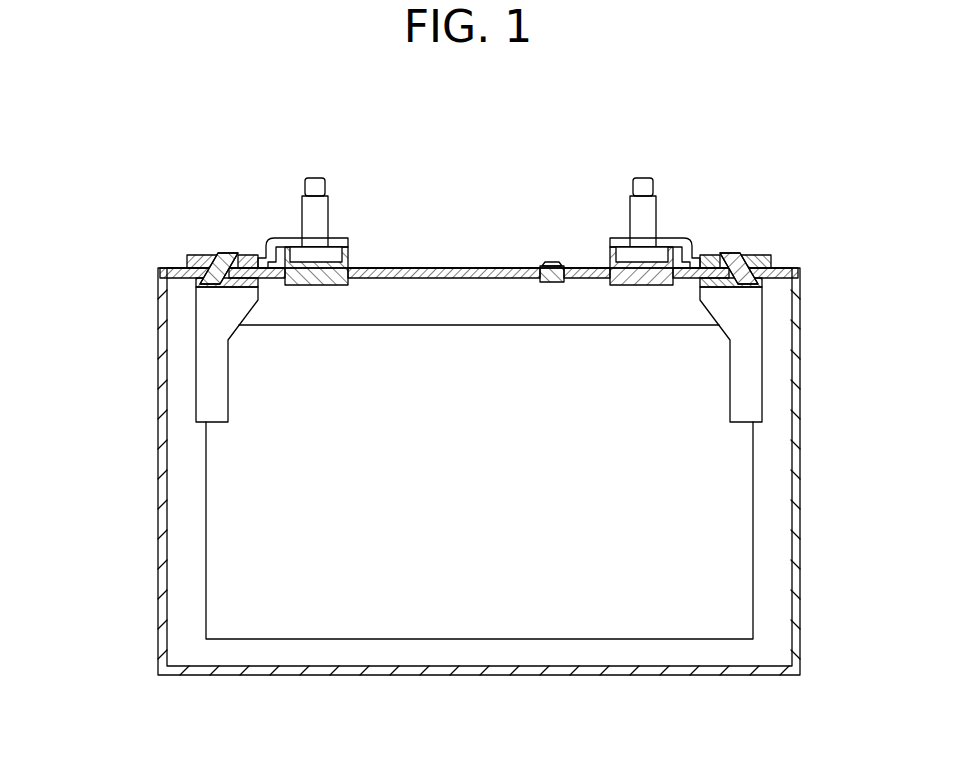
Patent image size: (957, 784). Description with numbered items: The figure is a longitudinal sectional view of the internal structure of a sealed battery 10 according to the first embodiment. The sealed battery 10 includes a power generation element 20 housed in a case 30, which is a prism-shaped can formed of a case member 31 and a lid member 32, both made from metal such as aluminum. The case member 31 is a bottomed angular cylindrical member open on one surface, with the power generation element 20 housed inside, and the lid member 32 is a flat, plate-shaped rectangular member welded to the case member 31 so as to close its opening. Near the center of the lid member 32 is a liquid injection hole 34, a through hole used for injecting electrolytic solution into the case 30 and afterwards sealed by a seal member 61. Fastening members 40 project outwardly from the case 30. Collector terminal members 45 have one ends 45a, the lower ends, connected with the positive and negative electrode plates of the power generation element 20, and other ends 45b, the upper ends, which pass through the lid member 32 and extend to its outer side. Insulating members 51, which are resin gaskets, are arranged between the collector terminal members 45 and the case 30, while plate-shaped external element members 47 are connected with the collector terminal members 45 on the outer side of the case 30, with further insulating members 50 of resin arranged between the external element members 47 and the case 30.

The sealed battery 10 is at (163, 186).
The power generation element 20 is at (232, 498).
The case 30 is at (100, 240).
The case member 31 is at (175, 273).
The lid member 32 is at (198, 262).
The liquid injection hole 34 is at (548, 266).
The fastening member 40 is at (318, 222).
The collector terminal member 45 is at (190, 334).
The one end of collector terminal member 45a is at (212, 405).
The other end of collector terminal member 45b is at (232, 252).
The external element member 47 is at (274, 240).
The insulating member 50 is at (345, 262).
The insulating member (gasket) 51 is at (200, 281).
The seal member 61 is at (556, 266).